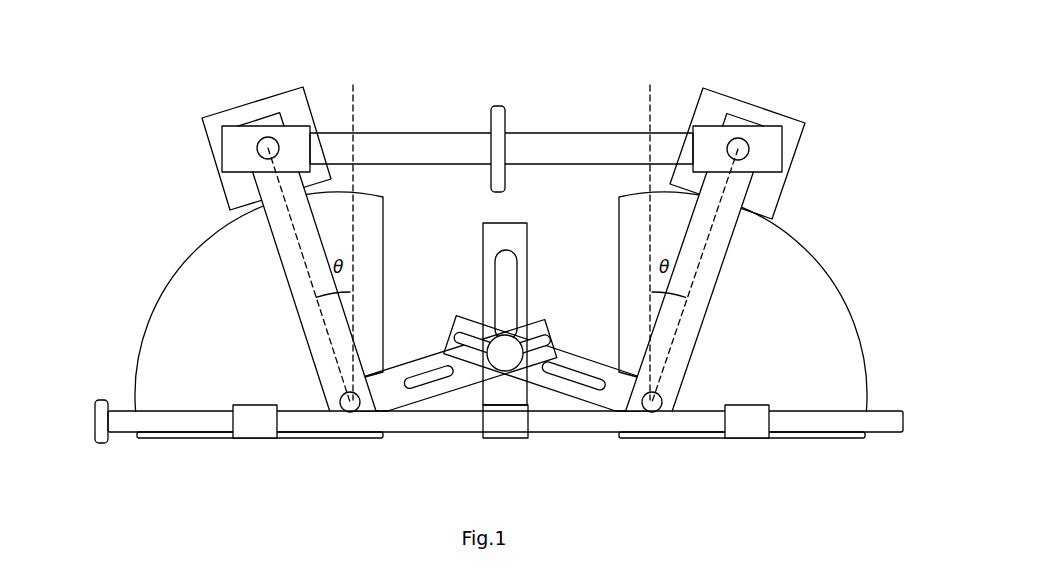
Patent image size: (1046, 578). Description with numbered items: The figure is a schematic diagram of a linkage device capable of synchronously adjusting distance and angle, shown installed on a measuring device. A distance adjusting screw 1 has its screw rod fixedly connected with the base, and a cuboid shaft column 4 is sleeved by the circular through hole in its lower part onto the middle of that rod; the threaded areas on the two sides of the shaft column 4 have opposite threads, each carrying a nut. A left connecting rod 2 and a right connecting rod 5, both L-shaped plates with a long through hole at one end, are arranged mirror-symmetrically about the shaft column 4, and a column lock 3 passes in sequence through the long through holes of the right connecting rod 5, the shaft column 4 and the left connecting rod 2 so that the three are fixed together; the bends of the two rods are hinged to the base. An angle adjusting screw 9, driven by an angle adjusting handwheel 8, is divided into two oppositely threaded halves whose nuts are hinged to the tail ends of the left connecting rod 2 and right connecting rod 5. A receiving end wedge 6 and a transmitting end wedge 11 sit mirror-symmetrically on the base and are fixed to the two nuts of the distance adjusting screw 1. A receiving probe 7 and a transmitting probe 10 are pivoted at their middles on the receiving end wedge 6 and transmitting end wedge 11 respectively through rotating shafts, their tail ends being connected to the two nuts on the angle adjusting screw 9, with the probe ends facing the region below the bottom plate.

The distance adjusting screw 1 is at (473, 444).
The left connecting rod 2 is at (284, 440).
The column lock 3 is at (426, 411).
The shaft column 4 is at (473, 355).
The right connecting rod 5 is at (606, 440).
The receiving end wedge 6 is at (778, 301).
The receiving probe 7 is at (783, 150).
The angle adjusting handwheel 8 is at (441, 107).
The angle adjusting screw 9 is at (502, 97).
The transmitting probe 10 is at (218, 145).
The transmitting end wedge 11 is at (230, 301).